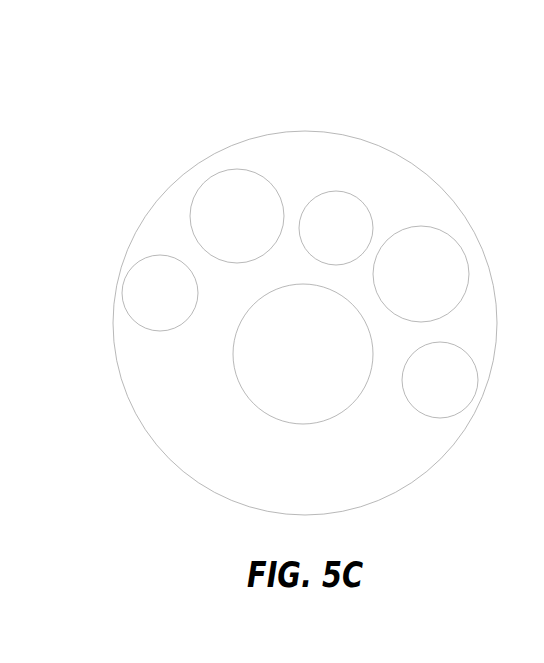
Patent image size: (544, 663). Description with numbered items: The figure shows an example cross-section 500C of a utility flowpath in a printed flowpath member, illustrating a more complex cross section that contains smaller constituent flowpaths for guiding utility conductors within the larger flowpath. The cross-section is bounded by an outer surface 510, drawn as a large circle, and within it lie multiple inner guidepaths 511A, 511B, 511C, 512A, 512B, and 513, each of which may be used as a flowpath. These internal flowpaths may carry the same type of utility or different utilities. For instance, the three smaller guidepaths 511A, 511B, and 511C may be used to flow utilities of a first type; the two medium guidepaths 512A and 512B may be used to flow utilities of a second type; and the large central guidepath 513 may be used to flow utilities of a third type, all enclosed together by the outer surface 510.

The cross-section 500C is at (424, 106).
The outer surface 510 is at (257, 138).
The inner guidepath 511A is at (184, 306).
The inner guidepath 511B is at (362, 242).
The inner guidepath 511C is at (466, 394).
The inner guidepath 512A is at (263, 226).
The inner guidepath 512B is at (446, 288).
The inner guidepath 513 is at (321, 366).